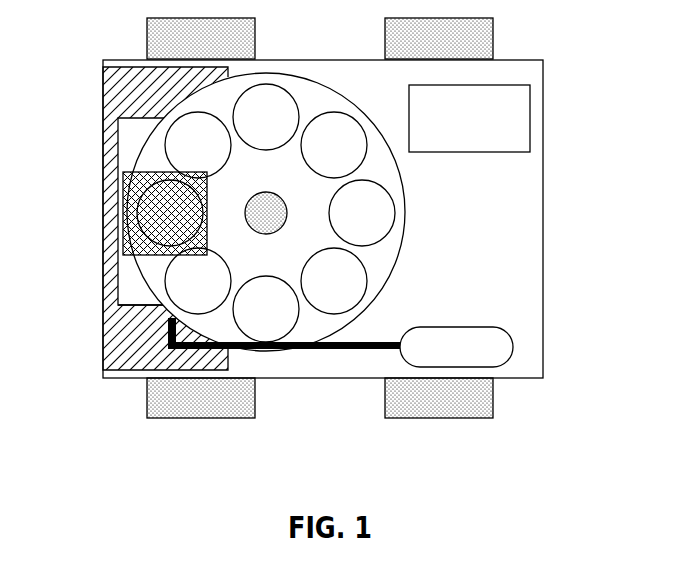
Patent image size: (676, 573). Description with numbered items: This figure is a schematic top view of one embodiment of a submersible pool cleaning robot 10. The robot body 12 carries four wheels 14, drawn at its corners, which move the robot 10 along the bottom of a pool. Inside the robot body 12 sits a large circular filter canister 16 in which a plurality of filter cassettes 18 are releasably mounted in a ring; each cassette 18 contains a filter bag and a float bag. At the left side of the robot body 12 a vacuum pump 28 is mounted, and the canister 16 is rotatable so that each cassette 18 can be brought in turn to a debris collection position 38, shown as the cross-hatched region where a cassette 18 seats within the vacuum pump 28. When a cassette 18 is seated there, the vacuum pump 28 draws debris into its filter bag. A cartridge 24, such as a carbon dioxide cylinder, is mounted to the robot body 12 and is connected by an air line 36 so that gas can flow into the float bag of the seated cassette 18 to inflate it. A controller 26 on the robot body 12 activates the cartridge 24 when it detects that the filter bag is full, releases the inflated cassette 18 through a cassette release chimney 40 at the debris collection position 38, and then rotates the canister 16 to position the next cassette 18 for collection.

The submersible pool cleaning robot 10 is at (607, 26).
The robot body 12 is at (460, 219).
The wheels 14 is at (188, 51).
The filter canister 16 is at (401, 258).
The filter cassettes 18 is at (253, 129).
The cartridge 24 is at (447, 361).
The controller 26 is at (457, 144).
The vacuum pump 28 is at (128, 130).
The air line 36 is at (362, 349).
The debris collection position 38 is at (151, 212).
The cassette release chimney 40 is at (148, 256).